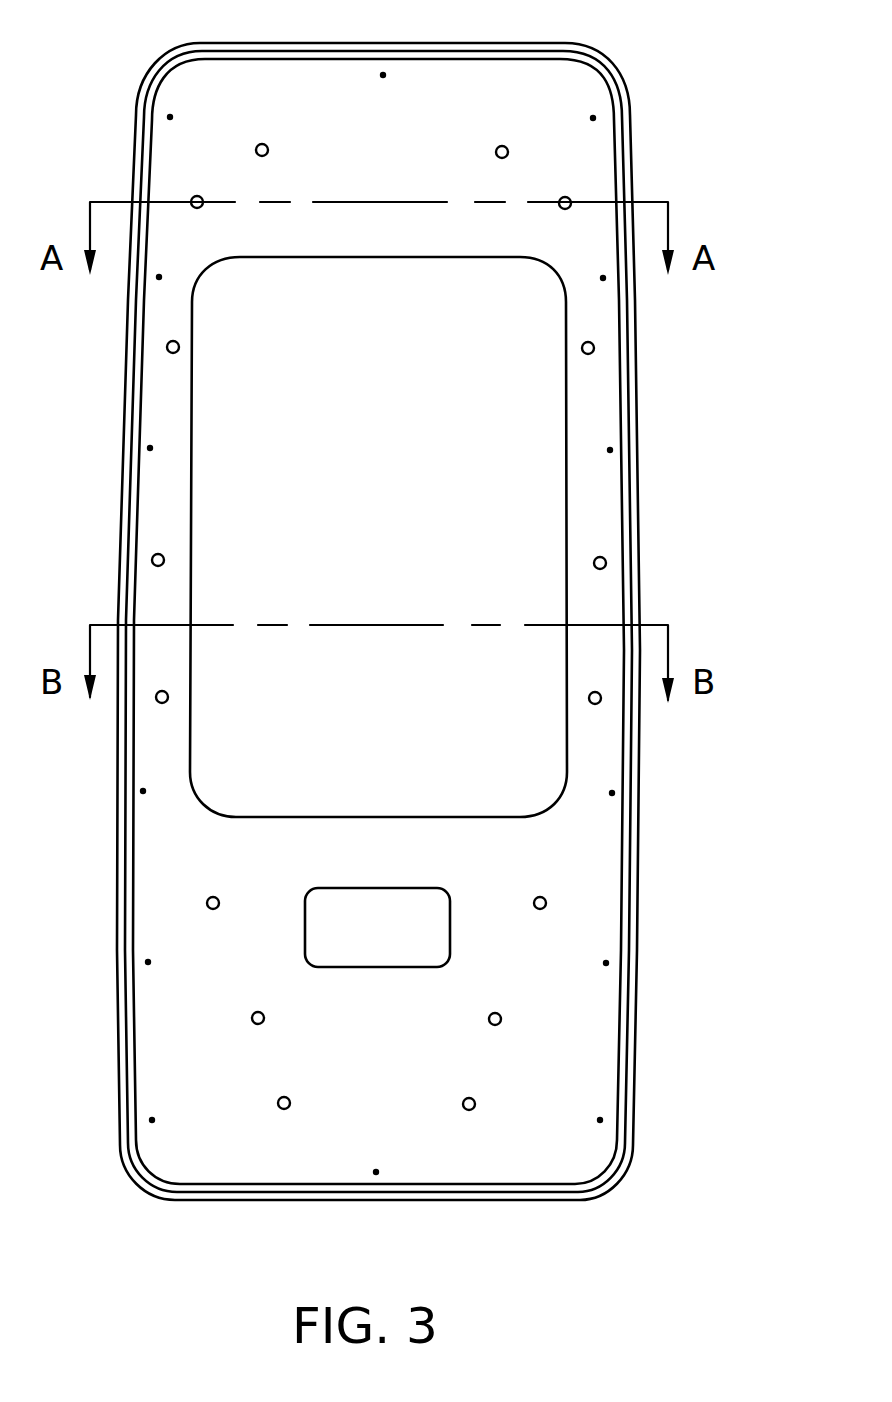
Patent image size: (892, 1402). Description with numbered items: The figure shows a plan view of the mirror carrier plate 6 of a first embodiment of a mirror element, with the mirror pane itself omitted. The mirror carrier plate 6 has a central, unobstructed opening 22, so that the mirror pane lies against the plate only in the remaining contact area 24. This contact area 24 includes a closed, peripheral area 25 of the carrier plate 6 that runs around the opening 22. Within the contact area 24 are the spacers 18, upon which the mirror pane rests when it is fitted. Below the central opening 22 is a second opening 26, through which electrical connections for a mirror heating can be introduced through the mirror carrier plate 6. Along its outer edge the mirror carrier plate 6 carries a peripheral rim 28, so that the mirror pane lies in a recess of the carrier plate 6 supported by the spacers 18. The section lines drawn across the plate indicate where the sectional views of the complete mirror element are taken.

The mirror carrier plate 6 is at (398, 600).
The spacers 18 is at (197, 196).
The central opening 22 is at (405, 522).
The contact area 24 is at (440, 149).
The peripheral area 25 is at (163, 828).
The second opening 26 is at (407, 945).
The peripheral rim 28 is at (635, 1060).